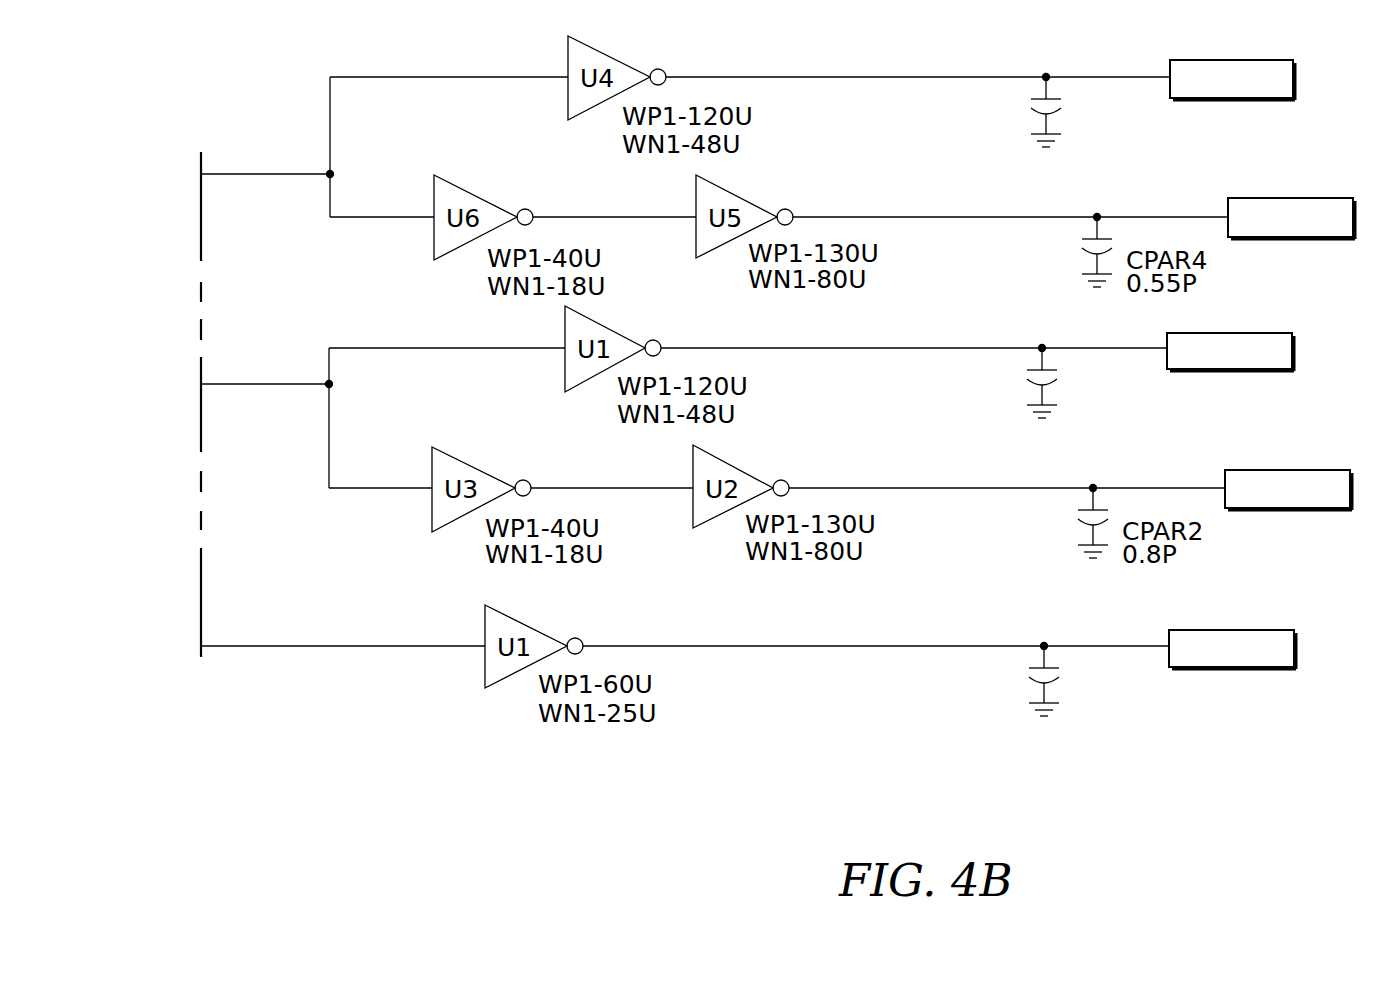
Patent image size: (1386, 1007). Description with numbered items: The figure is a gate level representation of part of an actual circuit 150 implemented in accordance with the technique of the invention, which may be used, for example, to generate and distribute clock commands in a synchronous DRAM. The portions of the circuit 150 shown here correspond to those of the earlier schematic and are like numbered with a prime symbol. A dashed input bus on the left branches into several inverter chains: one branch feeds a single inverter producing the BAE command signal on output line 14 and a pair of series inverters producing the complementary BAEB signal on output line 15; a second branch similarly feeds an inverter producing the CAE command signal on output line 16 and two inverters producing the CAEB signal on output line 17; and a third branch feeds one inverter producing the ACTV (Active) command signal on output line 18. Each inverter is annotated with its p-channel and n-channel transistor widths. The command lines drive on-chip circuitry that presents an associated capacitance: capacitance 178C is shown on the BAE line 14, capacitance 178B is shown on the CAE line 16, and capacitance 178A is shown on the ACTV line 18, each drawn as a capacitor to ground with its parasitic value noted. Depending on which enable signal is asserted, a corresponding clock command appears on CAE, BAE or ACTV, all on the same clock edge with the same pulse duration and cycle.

The circuit 150 is at (474, 870).
The capacitance 178C is at (1036, 116).
The capacitance 178B is at (1033, 387).
The capacitance 178A is at (1034, 685).
The BAE signal line 14 is at (1232, 80).
The BAEB signal line 15 is at (1291, 218).
The CAE signal line 16 is at (1230, 352).
The CAEB signal line 17 is at (1288, 490).
The ACTV signal line 18 is at (1232, 649).